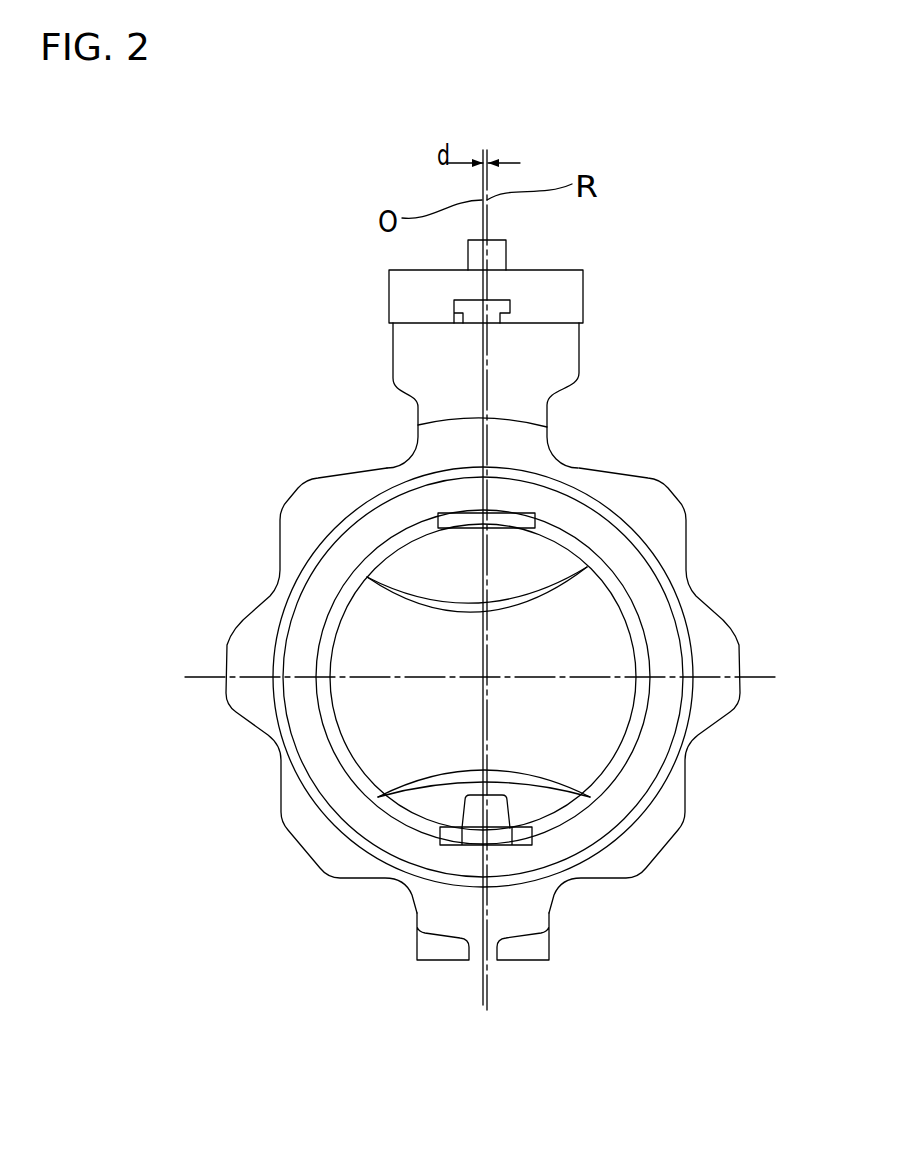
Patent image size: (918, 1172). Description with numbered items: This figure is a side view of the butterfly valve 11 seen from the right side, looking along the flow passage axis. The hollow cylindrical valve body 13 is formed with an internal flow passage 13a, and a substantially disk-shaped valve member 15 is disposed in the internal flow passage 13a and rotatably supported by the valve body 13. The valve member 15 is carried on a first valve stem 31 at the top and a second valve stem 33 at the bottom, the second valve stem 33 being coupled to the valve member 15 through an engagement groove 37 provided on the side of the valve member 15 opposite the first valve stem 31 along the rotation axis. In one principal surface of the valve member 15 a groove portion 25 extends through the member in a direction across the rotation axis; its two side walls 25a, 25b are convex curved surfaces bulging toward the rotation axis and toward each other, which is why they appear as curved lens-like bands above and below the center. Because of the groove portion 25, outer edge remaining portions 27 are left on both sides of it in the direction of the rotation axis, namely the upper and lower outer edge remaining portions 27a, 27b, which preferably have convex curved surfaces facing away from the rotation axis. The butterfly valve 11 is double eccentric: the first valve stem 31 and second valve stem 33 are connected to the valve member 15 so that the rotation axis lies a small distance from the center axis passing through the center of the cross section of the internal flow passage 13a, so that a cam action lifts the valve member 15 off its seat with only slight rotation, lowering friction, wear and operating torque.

The butterfly valve 11 is at (718, 267).
The valve body 13 is at (533, 448).
The internal flow passage 13a is at (585, 540).
The valve member 15 is at (605, 735).
The groove portion 25 is at (578, 729).
The side wall of the groove portion 25a is at (545, 605).
The side wall of the groove portion 25b is at (548, 812).
The outer edge remaining portions 27 is at (352, 712).
The outer edge remaining portion 27a is at (423, 577).
The outer edge remaining portion 27b is at (430, 802).
The first valve stem 31 is at (507, 255).
The second valve stem 33 is at (557, 838).
The engagement groove 37 is at (468, 815).